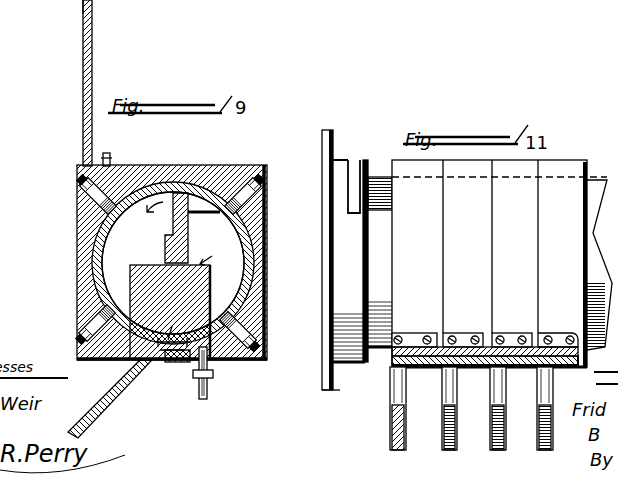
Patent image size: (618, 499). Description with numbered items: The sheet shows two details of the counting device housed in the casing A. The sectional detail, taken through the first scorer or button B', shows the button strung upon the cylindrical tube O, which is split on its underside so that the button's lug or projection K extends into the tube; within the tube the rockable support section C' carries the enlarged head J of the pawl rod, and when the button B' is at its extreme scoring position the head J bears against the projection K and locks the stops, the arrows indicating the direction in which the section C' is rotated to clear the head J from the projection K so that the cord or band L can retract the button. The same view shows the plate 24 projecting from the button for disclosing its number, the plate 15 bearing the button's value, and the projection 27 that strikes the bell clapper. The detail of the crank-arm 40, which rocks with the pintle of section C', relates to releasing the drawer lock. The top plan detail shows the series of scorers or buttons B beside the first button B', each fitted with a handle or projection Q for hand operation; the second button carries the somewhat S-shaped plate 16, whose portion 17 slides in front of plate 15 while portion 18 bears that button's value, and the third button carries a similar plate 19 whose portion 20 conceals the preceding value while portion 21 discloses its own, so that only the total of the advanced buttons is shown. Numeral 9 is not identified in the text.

In FIG. 9, the part (cut off at sheet top) 9 is at (82, 1).
In FIG. 9, the plate 15 is at (83, 78).
In FIG. 11, the plate 15 is at (400, 338).
In FIG. 9, the projection 27 is at (196, 396).
In FIG. 9, the plate 24 is at (112, 396).
In FIG. 9, the first scorer or button B' is at (148, 262).
In FIG. 11, the first scorer or button B' is at (362, 237).
In FIG. 9, the enlarged head J is at (165, 247).
In FIG. 9, the support section C' is at (204, 230).
In FIG. 9, the lug or projection K is at (215, 261).
In FIG. 9, the cord or band L is at (200, 297).
In FIG. 9, the tube O is at (173, 263).
In FIG. 11, the casing A is at (322, 143).
In FIG. 11, the crank-arm 40 is at (357, 162).
In FIG. 11, the scorers or buttons B is at (502, 249).
In FIG. 11, the plate 16 is at (438, 336).
In FIG. 11, the plate portion 17 is at (415, 369).
In FIG. 11, the plate portion 18 is at (461, 336).
In FIG. 11, the plate 19 is at (490, 338).
In FIG. 11, the plate portion 20 is at (467, 369).
In FIG. 11, the plate portion 21 is at (511, 337).
In FIG. 11, the handle or projection Q is at (392, 445).